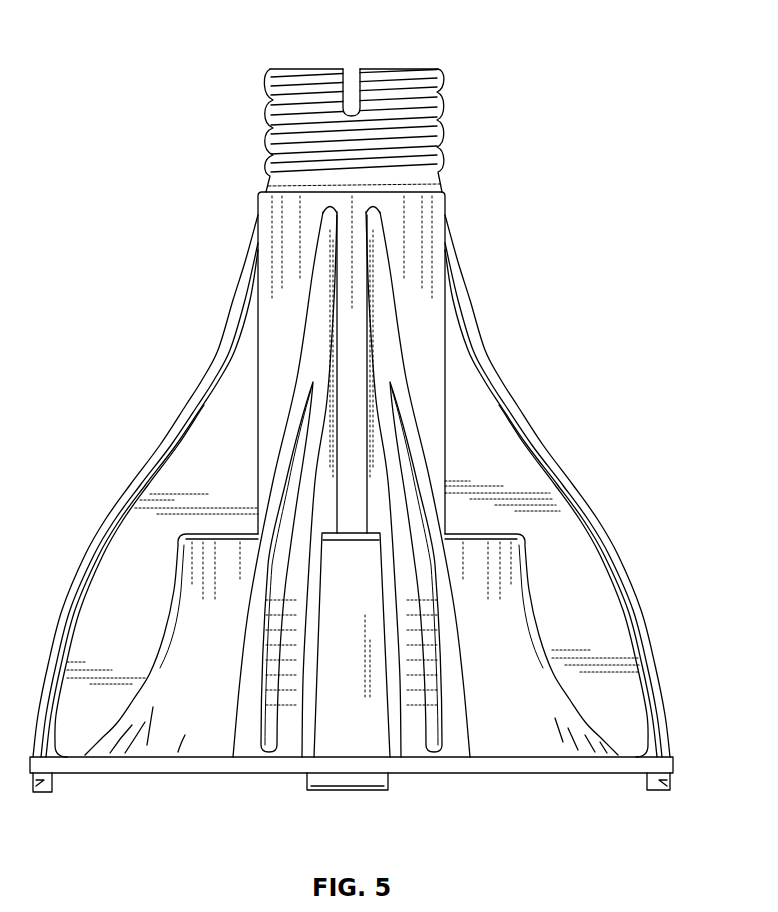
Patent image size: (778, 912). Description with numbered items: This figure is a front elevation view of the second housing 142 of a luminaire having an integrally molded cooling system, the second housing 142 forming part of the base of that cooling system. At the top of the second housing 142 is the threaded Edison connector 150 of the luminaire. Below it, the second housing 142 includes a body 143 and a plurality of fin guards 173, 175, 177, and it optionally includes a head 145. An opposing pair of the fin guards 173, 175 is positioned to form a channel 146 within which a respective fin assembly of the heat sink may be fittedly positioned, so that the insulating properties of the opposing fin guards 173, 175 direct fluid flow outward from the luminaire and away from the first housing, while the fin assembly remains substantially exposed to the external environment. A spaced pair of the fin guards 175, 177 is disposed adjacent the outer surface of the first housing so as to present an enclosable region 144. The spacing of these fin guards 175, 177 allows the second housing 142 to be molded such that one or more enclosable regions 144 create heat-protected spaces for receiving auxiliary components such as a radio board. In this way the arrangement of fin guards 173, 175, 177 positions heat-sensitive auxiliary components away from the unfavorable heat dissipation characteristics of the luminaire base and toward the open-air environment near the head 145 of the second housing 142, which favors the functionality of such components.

The second housing 142 is at (238, 40).
The Edison connector 150 is at (440, 127).
The body 143 is at (420, 278).
The fin guard 177 is at (633, 634).
The head 145 is at (498, 602).
The fin guard 173 is at (293, 718).
The fin guard 175 is at (457, 715).
The channel 146 is at (327, 722).
The enclosable region 144 is at (530, 722).